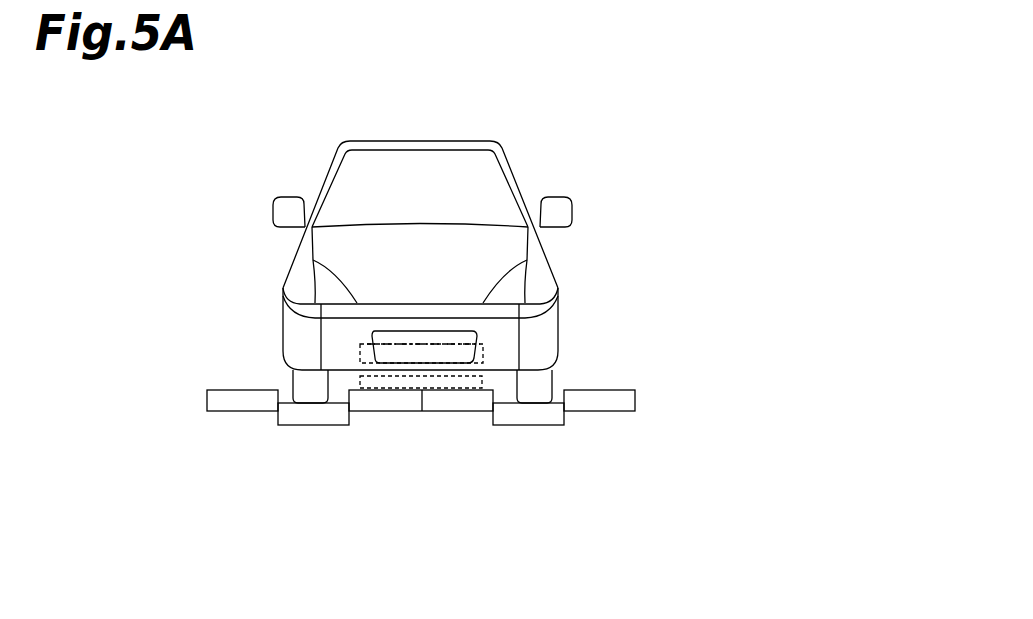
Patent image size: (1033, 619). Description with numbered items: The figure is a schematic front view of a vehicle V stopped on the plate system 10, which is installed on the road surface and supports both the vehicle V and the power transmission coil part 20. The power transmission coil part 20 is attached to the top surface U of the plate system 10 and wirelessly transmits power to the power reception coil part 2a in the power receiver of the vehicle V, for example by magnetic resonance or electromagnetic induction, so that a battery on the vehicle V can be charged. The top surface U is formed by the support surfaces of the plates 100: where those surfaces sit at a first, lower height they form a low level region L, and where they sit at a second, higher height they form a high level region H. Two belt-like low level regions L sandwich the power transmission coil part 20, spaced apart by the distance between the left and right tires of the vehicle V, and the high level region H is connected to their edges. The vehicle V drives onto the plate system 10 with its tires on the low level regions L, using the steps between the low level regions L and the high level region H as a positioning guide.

The vehicle V is at (512, 160).
The power reception coil part 2a is at (485, 358).
The power transmission coil part 20 is at (482, 383).
The plate system 10 is at (369, 423).
The plates 100 is at (382, 405).
The high level region H is at (227, 392).
The low level region L is at (285, 405).
The top surface U is at (353, 391).